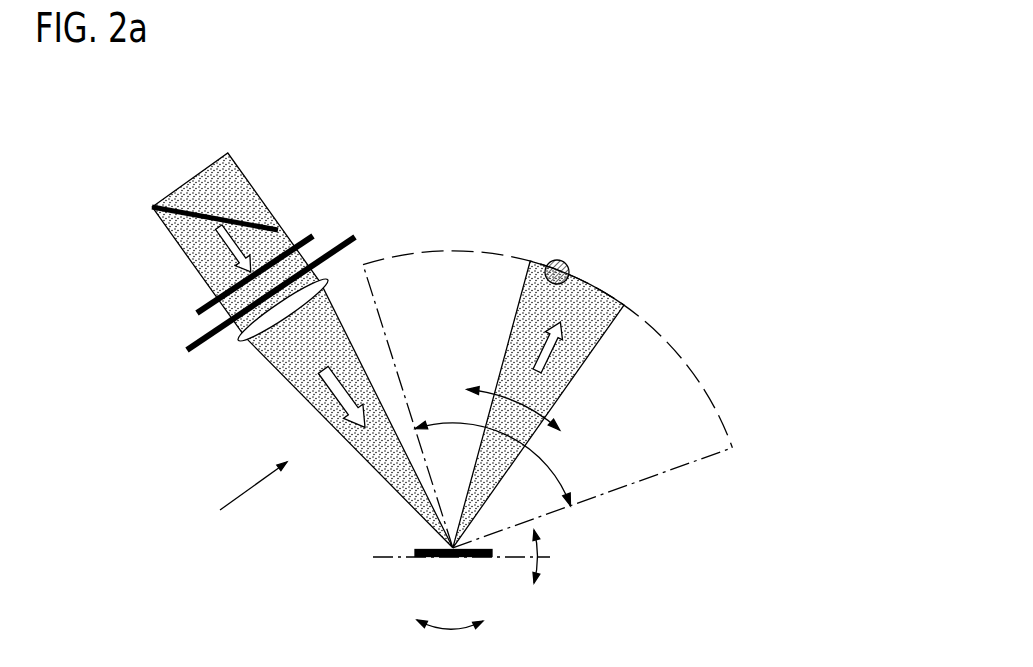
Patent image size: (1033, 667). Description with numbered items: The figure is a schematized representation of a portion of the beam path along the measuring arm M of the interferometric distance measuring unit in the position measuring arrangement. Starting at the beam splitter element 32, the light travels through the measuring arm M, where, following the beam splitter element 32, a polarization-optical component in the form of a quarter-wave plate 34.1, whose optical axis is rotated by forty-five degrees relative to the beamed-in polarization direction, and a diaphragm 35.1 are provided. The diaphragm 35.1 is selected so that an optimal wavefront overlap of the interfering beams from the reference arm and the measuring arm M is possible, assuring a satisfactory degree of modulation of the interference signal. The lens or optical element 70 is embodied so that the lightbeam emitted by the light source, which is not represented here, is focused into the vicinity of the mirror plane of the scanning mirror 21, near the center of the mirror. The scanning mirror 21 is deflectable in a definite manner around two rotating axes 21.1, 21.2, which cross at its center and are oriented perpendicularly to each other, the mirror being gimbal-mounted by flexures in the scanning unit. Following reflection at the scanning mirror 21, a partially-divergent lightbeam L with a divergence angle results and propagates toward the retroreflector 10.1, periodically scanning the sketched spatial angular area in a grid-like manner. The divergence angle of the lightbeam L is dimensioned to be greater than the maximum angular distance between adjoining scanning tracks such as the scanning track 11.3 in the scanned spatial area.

The beam splitter element 32 is at (187, 238).
The λ/4 plate 34.1 is at (305, 232).
The diaphragm 35.1 is at (187, 343).
The optical element 70 is at (242, 337).
The retroreflector 10.1 is at (558, 260).
The scanning track 11.3 is at (682, 352).
The rotating axis 21.2 is at (413, 553).
The scanning mirror 21 is at (417, 561).
The rotating axis 21.1 is at (483, 561).
The measuring arm M is at (241, 501).
The partially-divergent lightbeam L is at (538, 404).